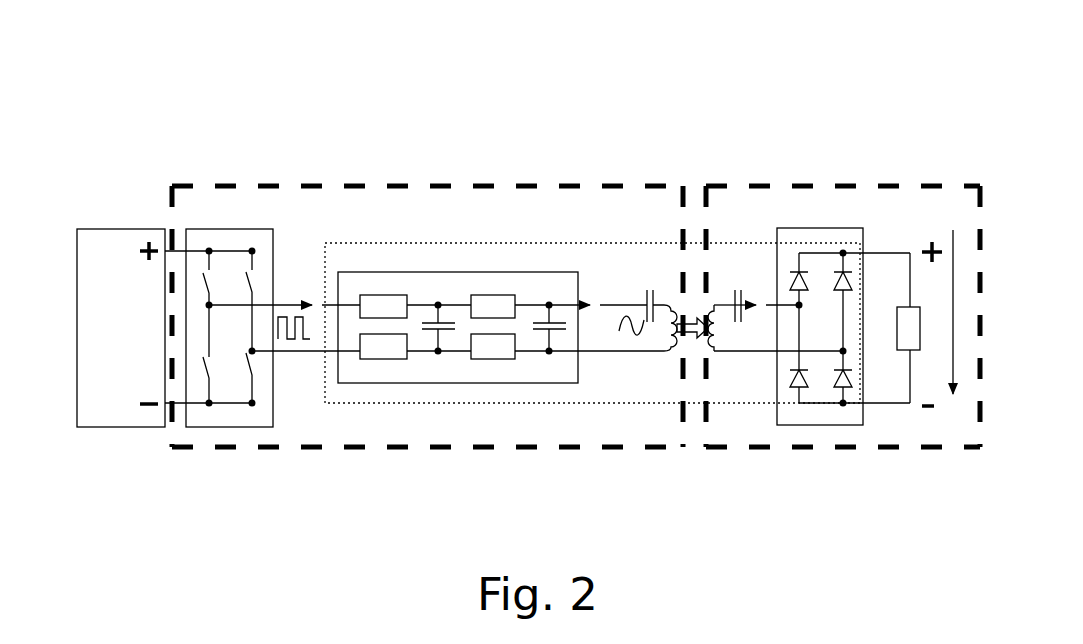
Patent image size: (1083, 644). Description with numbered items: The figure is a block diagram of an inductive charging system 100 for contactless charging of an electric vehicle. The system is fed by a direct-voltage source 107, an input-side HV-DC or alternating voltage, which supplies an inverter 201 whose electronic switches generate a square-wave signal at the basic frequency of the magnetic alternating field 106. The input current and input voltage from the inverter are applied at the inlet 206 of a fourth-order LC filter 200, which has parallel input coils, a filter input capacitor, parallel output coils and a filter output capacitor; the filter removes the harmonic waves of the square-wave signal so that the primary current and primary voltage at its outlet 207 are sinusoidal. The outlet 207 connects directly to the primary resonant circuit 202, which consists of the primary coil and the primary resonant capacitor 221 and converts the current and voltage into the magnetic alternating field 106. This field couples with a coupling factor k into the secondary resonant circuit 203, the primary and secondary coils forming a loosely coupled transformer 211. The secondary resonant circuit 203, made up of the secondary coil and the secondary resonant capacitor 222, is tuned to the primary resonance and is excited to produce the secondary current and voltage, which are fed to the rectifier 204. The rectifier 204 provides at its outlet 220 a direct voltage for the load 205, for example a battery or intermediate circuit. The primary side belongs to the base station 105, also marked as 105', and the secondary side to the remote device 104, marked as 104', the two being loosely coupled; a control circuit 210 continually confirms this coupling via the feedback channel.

The inductive charging system 100 is at (138, 118).
The base station 105 is at (427, 269).
The primary-side unit boundary 105' is at (427, 139).
The direct-voltage source 107 is at (83, 218).
The inverter 201 is at (272, 229).
The inlet of the filter 206 is at (318, 360).
The filter 200 is at (435, 270).
The control circuit 210 is at (443, 403).
The outlet of the filter 207 is at (592, 253).
The primary resonant capacitor 221 is at (645, 253).
The primary resonant circuit 202 is at (638, 372).
The magnetic alternating field 106 is at (692, 268).
The loosely coupled transformer 211 is at (692, 311).
The secondary resonant circuit 203 is at (728, 388).
The secondary resonant capacitor 222 is at (732, 253).
The rectifier 204 is at (833, 228).
The remote device 104 is at (843, 272).
The secondary-side unit boundary 104' is at (843, 153).
The load 205 is at (920, 345).
The outlet of the rectifier 220 is at (895, 428).